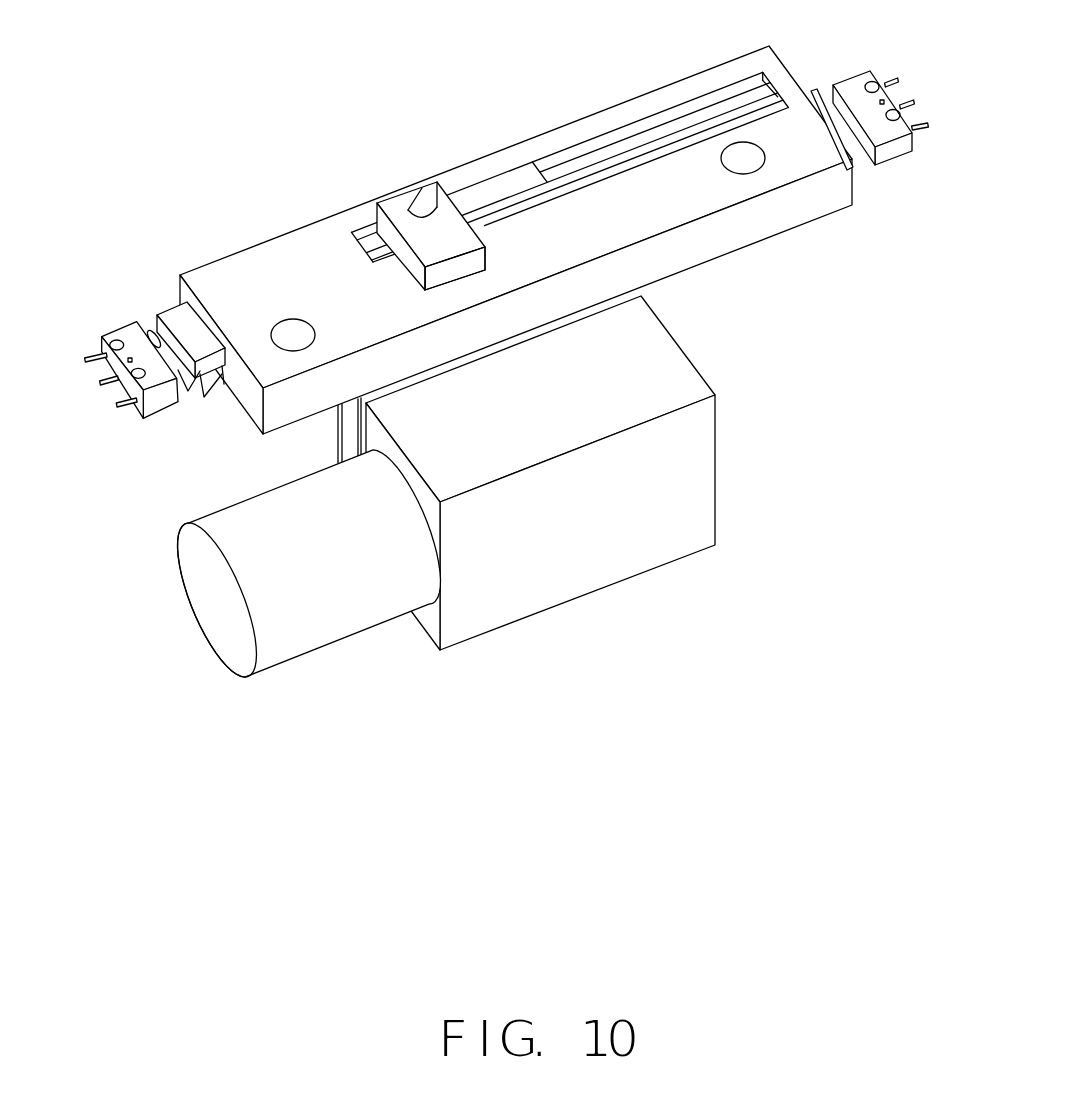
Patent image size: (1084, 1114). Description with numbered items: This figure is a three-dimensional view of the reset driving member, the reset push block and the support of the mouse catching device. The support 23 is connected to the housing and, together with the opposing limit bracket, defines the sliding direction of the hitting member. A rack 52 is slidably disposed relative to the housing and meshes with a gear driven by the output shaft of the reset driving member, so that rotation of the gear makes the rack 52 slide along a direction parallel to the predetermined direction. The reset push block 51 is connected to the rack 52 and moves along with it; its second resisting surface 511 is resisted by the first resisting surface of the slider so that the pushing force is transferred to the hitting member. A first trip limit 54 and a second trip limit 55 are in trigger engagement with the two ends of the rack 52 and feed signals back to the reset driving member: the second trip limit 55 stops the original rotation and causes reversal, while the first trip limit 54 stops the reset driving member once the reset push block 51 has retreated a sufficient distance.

The support 23 is at (303, 250).
The reset push block 51 is at (435, 181).
The second resisting surface 511 is at (487, 250).
The rack 52 is at (512, 195).
The first trip limit 54 is at (128, 332).
The second trip limit 55 is at (857, 78).